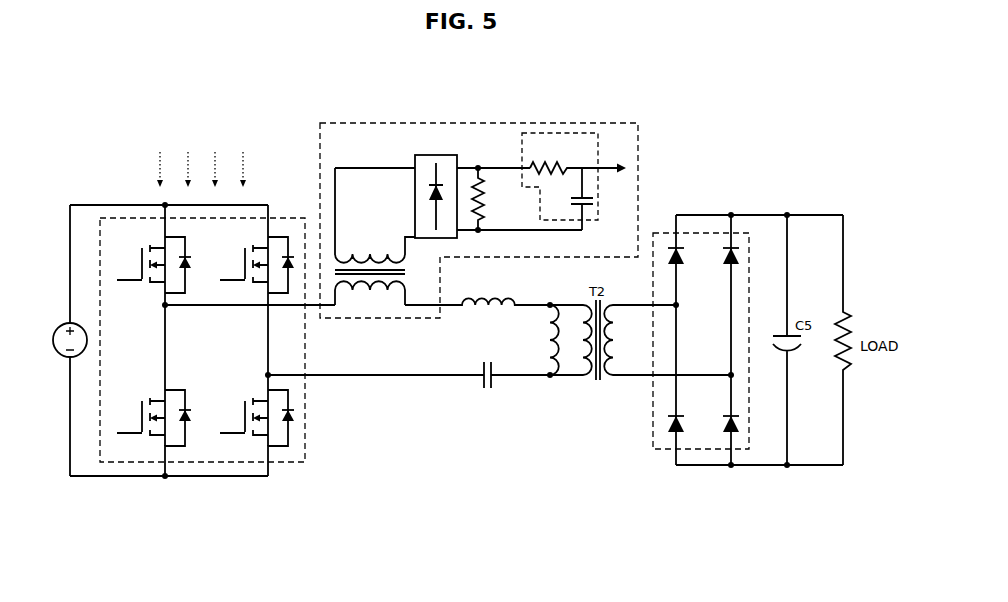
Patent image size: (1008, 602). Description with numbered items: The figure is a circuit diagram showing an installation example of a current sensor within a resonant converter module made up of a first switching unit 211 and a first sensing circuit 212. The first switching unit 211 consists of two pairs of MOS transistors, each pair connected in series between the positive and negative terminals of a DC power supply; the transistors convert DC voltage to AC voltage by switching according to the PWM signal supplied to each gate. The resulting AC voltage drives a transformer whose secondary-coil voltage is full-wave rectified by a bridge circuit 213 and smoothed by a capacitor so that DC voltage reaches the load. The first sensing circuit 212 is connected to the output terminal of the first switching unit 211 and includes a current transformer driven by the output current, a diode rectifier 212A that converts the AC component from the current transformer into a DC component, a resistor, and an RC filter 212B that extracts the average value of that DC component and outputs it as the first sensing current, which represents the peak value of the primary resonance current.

The first switching unit 211 is at (212, 462).
The first sensing circuit 212 is at (565, 122).
The diode rectifier 212A is at (438, 153).
The RC filter 212B is at (598, 200).
The bridge circuit 213 is at (697, 449).